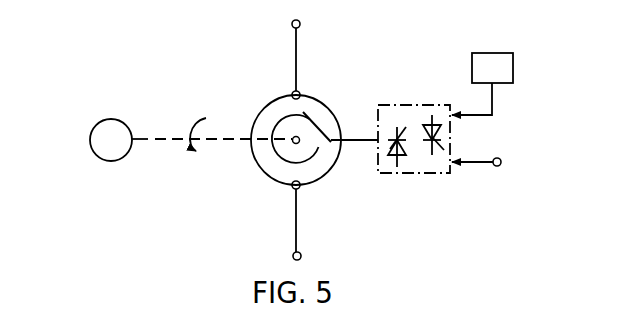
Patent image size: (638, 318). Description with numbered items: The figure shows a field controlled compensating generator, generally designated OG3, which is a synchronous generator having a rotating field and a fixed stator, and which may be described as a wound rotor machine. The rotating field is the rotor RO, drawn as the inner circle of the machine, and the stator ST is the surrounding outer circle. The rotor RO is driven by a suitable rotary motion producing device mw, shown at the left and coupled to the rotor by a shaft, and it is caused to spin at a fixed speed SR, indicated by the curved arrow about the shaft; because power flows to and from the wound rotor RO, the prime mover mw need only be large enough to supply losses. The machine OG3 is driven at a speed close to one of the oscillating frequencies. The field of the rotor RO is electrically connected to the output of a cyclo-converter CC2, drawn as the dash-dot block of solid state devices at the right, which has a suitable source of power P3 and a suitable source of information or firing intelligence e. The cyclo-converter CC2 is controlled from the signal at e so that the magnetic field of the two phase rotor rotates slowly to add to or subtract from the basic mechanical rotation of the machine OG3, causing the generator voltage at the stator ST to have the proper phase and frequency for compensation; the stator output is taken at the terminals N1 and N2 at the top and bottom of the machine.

The rotary motion producing device mw is at (111, 140).
The fixed speed SR is at (205, 118).
The rotor RO is at (273, 128).
The stator ST is at (317, 100).
The field controlled compensating generator OG3 is at (264, 198).
The terminal N1 is at (292, 24).
The terminal N2 is at (293, 256).
The cyclo-converter CC2 is at (400, 105).
The source of power P3 is at (482, 84).
The source of information or firing intelligence e is at (487, 161).